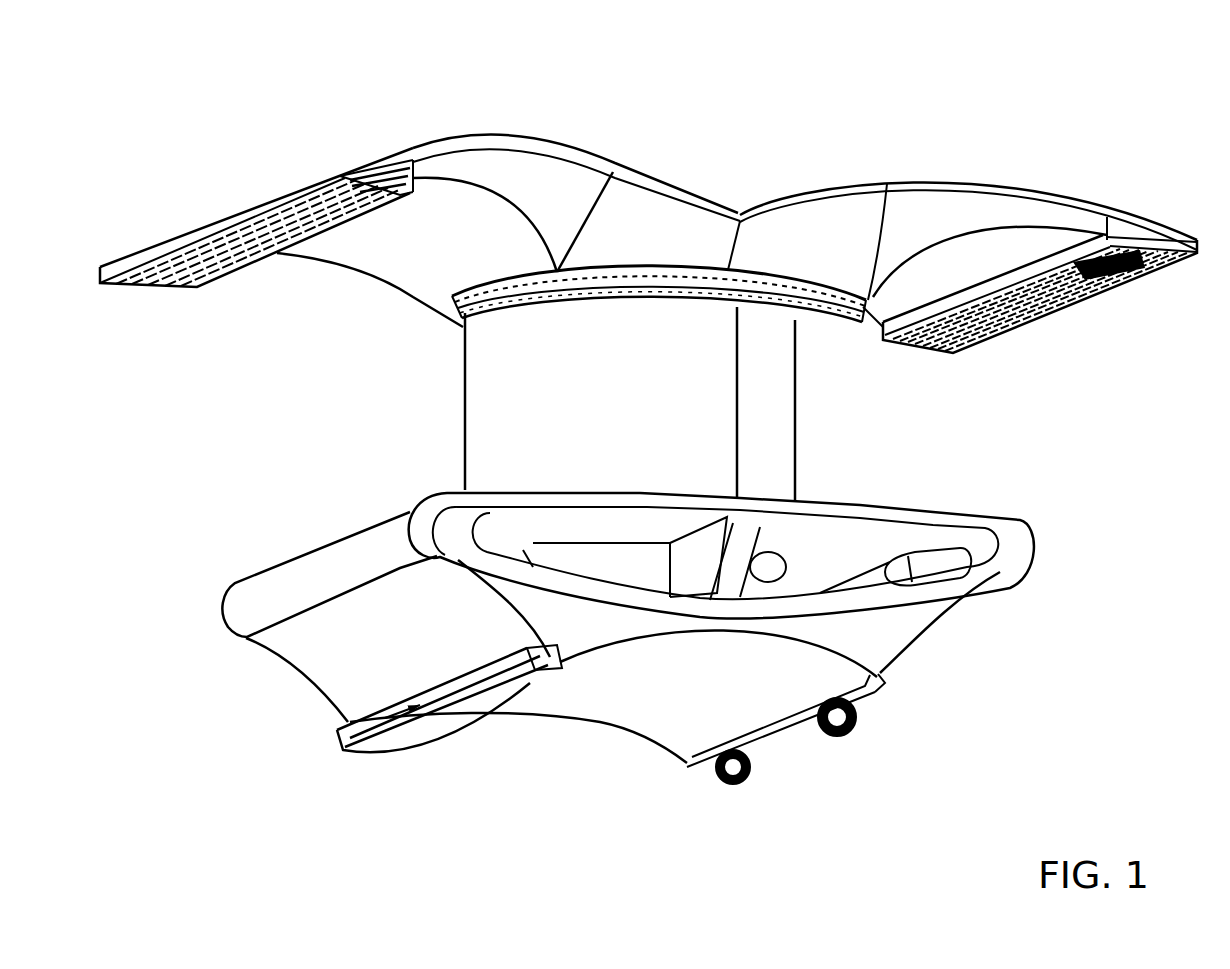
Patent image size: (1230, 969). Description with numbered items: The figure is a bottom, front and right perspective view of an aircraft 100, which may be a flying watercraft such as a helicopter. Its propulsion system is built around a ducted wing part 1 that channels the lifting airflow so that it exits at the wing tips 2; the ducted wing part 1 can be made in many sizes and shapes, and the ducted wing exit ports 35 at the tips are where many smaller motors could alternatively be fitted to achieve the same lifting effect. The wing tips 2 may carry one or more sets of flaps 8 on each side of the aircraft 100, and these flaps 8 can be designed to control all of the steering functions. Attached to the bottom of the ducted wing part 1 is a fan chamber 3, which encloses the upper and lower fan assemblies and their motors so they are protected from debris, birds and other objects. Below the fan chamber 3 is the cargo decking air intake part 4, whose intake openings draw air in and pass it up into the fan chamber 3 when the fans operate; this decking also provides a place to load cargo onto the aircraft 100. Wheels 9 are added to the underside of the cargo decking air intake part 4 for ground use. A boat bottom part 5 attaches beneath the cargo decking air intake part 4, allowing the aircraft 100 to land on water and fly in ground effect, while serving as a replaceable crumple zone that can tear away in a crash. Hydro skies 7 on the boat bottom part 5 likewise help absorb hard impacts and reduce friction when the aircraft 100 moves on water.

The aircraft 100 is at (181, 92).
The ducted wing part 1 is at (612, 178).
The wing tips 2 is at (141, 236).
The fan chamber 3 is at (714, 405).
The cargo decking air intake part 4 is at (537, 524).
The boat bottom part 5 is at (880, 626).
The hydro skies 7 is at (347, 743).
The flaps 8 is at (341, 236).
The wheels 9 is at (829, 749).
The ducted wing exit ports 35 is at (1131, 281).